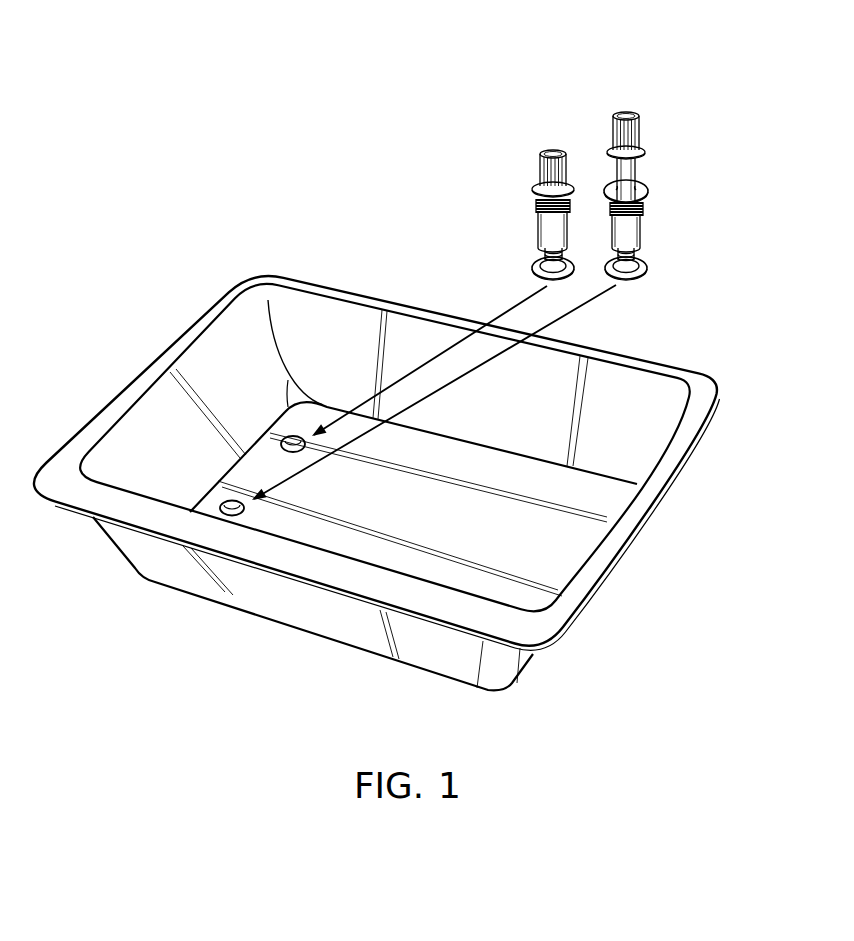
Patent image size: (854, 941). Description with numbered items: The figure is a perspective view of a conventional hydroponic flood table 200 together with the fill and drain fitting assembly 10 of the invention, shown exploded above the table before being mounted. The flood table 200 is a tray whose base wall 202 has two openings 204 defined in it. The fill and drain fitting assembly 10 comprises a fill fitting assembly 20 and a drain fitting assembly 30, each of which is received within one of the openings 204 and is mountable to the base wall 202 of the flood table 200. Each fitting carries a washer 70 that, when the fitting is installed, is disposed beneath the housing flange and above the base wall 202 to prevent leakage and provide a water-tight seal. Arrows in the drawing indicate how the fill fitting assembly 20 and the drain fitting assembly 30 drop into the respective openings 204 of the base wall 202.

The fill and drain fitting assembly 10 is at (617, 104).
The fill fitting assembly 20 is at (527, 210).
The drain fitting assembly 30 is at (658, 192).
The washer 70 is at (538, 264).
The hydroponic flood table 200 is at (238, 268).
The base wall 202 is at (451, 517).
The openings 204 is at (240, 500).